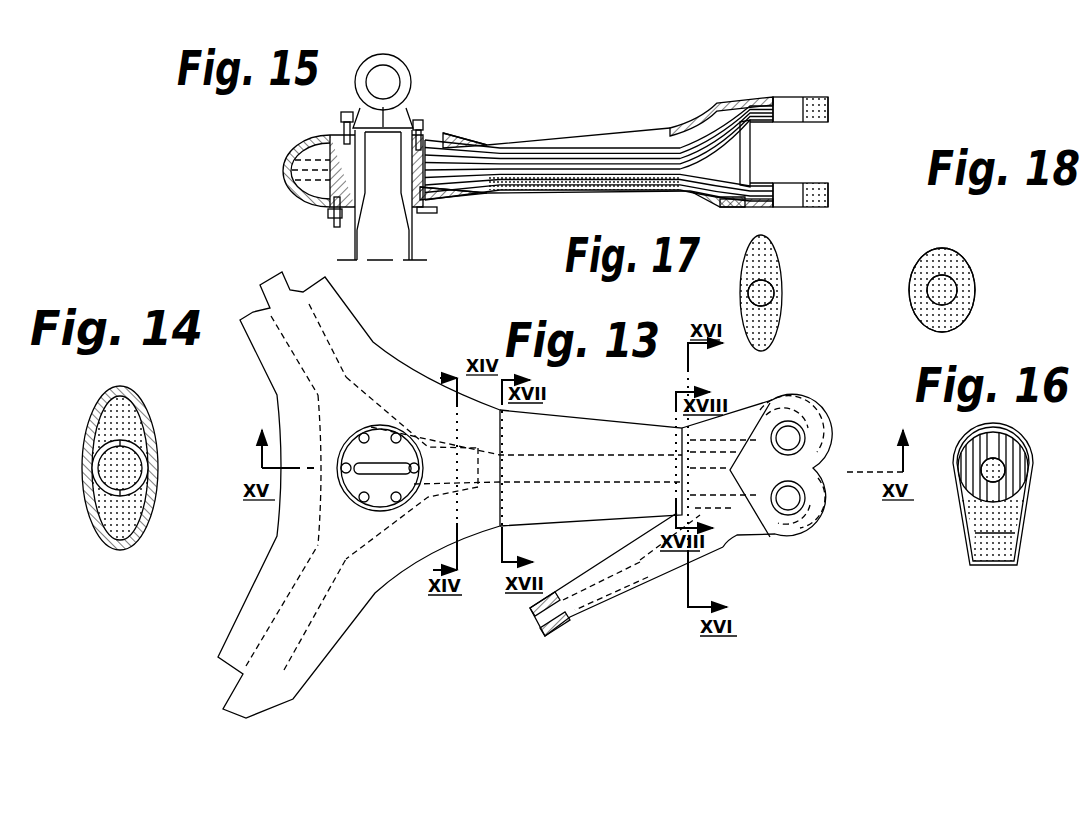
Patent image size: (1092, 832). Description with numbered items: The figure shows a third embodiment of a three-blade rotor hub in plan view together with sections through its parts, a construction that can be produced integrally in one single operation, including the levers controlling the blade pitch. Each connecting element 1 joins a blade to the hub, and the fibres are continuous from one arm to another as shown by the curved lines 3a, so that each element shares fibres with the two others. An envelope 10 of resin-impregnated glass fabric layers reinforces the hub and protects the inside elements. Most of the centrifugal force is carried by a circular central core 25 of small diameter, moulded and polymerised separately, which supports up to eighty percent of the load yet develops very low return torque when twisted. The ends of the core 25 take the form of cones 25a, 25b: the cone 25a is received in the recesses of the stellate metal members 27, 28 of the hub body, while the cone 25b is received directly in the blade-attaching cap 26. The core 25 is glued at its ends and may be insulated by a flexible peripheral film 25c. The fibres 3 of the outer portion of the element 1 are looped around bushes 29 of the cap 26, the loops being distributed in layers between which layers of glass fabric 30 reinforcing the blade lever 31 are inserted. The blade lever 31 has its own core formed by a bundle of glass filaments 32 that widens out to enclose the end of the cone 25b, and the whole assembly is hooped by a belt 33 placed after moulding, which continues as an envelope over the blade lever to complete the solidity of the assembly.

In FIG. 13, the connecting element 1 is at (592, 418).
In FIG. 17, the connecting element 1 is at (778, 317).
In FIG. 18, the connecting element 1 is at (968, 313).
In FIG. 13, the fibres 3 is at (627, 440).
In FIG. 18, the fibres 3 is at (947, 262).
In FIG. 13, the curved lines 3a is at (425, 402).
In FIG. 14, the curved lines 3a is at (125, 418).
In FIG. 14, the envelope 10 is at (153, 497).
In FIG. 15, the core 25 is at (540, 157).
In FIG. 13, the core 25 is at (535, 463).
In FIG. 17, the core 25 is at (780, 293).
In FIG. 18, the core 25 is at (975, 292).
In FIG. 15, the cone 25a is at (462, 142).
In FIG. 14, the cone 25a is at (148, 460).
In FIG. 15, the cone 25b is at (713, 150).
In FIG. 17, the flexible peripheral film 25c is at (747, 295).
In FIG. 15, the blade-attaching cap 26 is at (836, 121).
In FIG. 13, the blade-attaching cap 26 is at (833, 462).
In FIG. 15, the stellate metal member 27 is at (440, 197).
In FIG. 14, the stellate metal member 27 is at (157, 478).
In FIG. 15, the stellate metal member 28 is at (432, 140).
In FIG. 14, the stellate metal member 28 is at (98, 448).
In FIG. 15, the bushes 29 is at (800, 93).
In FIG. 13, the bushes 29 is at (817, 430).
In FIG. 15, the layers of glass fabric 30 is at (760, 107).
In FIG. 13, the layers of glass fabric 30 is at (788, 468).
In FIG. 16, the layers of glass fabric 30 is at (1020, 460).
In FIG. 13, the blade lever 31 is at (722, 556).
In FIG. 15, the bundle of glass filaments 32 is at (752, 160).
In FIG. 13, the bundle of glass filaments 32 is at (640, 560).
In FIG. 16, the bundle of glass filaments 32 is at (1017, 538).
In FIG. 15, the belt 33 is at (722, 203).
In FIG. 16, the belt 33 is at (1033, 510).